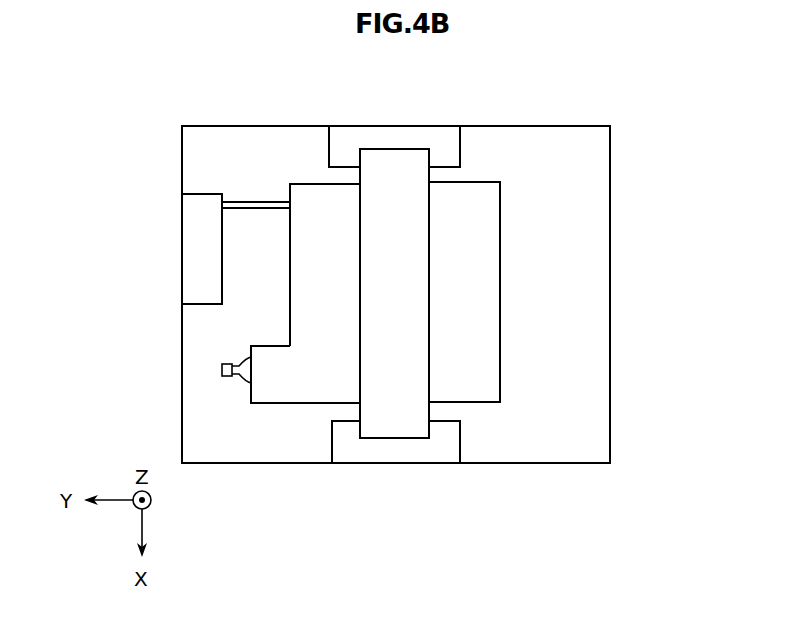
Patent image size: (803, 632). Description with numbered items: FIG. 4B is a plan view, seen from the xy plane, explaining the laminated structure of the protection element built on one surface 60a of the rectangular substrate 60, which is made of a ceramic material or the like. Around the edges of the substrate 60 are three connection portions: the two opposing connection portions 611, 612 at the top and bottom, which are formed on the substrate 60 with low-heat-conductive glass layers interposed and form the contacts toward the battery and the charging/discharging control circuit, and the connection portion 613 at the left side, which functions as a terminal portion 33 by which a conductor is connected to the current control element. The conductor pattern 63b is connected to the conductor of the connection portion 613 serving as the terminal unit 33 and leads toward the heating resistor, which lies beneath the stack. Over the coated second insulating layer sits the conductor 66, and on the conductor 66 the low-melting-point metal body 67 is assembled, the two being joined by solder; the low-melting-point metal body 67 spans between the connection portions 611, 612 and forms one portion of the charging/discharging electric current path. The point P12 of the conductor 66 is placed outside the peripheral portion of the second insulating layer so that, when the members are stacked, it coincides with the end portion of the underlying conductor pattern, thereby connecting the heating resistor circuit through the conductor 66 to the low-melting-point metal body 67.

The substrate 60 is at (612, 402).
The one surface of the substrate 60a is at (588, 343).
The connection portion 611 is at (413, 135).
The connection portion 612 is at (400, 452).
The connection portion 613 is at (157, 249).
The terminal portion 33 is at (195, 231).
The conductor pattern 63b is at (248, 204).
The conductor 66 is at (483, 392).
The low-melting-point metal body 67 is at (385, 160).
The point of the conductor P12 is at (243, 372).